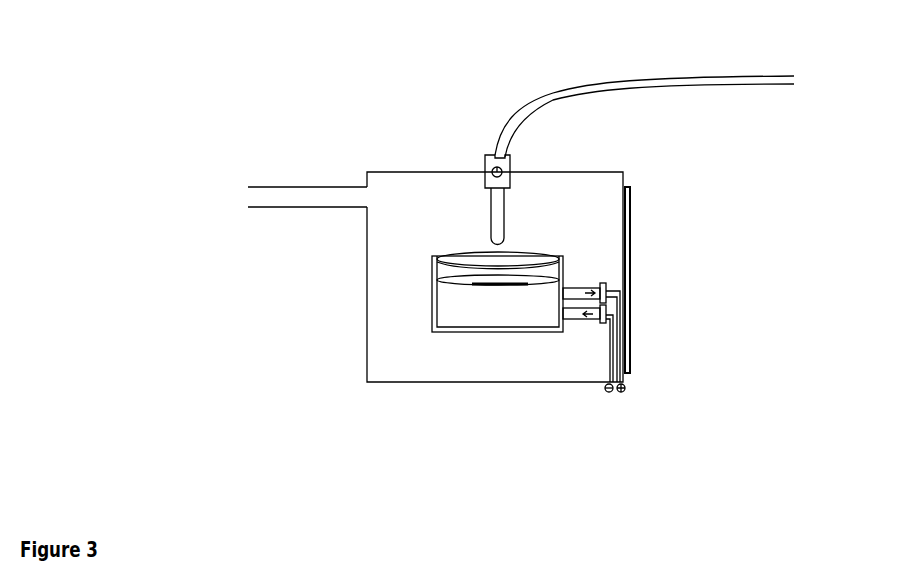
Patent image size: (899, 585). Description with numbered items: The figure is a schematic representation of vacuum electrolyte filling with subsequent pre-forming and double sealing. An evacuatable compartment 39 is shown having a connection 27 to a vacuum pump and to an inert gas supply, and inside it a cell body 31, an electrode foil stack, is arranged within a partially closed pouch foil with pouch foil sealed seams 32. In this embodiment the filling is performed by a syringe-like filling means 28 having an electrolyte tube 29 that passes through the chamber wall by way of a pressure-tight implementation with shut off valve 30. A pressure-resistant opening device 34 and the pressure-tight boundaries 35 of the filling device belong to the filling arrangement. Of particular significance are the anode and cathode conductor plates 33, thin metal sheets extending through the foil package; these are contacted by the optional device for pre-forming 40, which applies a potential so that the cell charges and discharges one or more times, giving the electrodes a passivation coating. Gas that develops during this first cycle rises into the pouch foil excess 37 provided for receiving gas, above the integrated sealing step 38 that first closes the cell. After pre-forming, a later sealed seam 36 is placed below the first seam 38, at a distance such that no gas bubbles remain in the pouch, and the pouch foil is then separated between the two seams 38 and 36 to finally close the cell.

The connection to the vacuum pump and inert gas supply 27 is at (263, 198).
The syringe-like filling means 28 is at (497, 232).
The electrolyte tube 29 is at (553, 97).
The pressure-tight implementation with shut off valve 30 is at (497, 167).
The cell body 31 is at (525, 282).
The pouch foil sealed seams 32 is at (566, 283).
The anode and cathode conductor plates 33 is at (605, 326).
The pressure-resistant opening device 34 is at (627, 350).
The pressure-tight boundaries of the filling device 35 is at (628, 365).
The later sealed seam 36 is at (440, 282).
The pouch foil excess 37 is at (447, 275).
The integrated sealing step 38 is at (445, 267).
The evacuatable compartment 39 is at (385, 244).
The optional device for pre-forming 40 is at (600, 318).